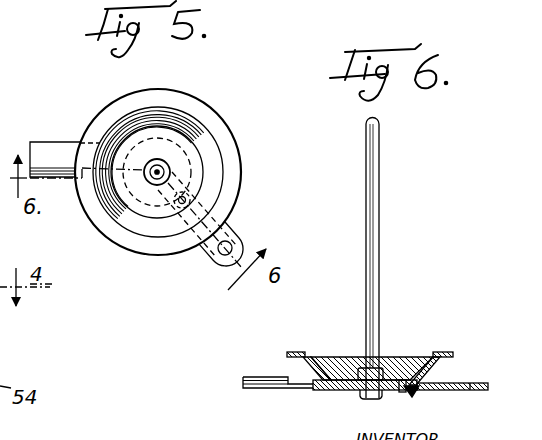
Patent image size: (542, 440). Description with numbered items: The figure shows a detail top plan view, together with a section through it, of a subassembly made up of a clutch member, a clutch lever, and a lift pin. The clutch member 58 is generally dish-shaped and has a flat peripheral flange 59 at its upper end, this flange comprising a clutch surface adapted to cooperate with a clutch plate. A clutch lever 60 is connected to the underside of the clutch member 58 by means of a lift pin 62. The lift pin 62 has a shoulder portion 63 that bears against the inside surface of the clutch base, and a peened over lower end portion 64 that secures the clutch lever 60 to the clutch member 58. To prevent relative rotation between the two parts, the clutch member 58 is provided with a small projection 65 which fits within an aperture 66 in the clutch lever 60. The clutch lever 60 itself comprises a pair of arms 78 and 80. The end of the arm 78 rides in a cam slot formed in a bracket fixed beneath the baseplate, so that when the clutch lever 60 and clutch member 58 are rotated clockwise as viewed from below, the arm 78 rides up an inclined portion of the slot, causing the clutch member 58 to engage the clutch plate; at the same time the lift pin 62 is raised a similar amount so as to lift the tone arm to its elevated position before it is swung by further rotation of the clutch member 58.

In FIG. 5, the clutch member 58 is at (197, 130).
In FIG. 6, the clutch member 58 is at (298, 359).
In FIG. 5, the flat peripheral flange 59 is at (240, 166).
In FIG. 6, the flat peripheral flange 59 is at (437, 354).
In FIG. 5, the clutch lever 60 is at (96, 135).
In FIG. 6, the clutch lever 60 is at (317, 393).
In FIG. 5, the lift pin 62 is at (158, 168).
In FIG. 6, the lift pin 62 is at (380, 233).
In FIG. 6, the shoulder portion 63 is at (383, 368).
In FIG. 6, the peened over lower end portion 64 is at (372, 398).
In FIG. 5, the small projection 65 is at (182, 205).
In FIG. 6, the small projection 65 is at (403, 393).
In FIG. 6, the aperture 66 is at (416, 395).
In FIG. 5, the arm 78 is at (53, 165).
In FIG. 6, the arm 78 is at (262, 388).
In FIG. 5, the arm 80 is at (232, 237).
In FIG. 6, the arm 80 is at (452, 386).